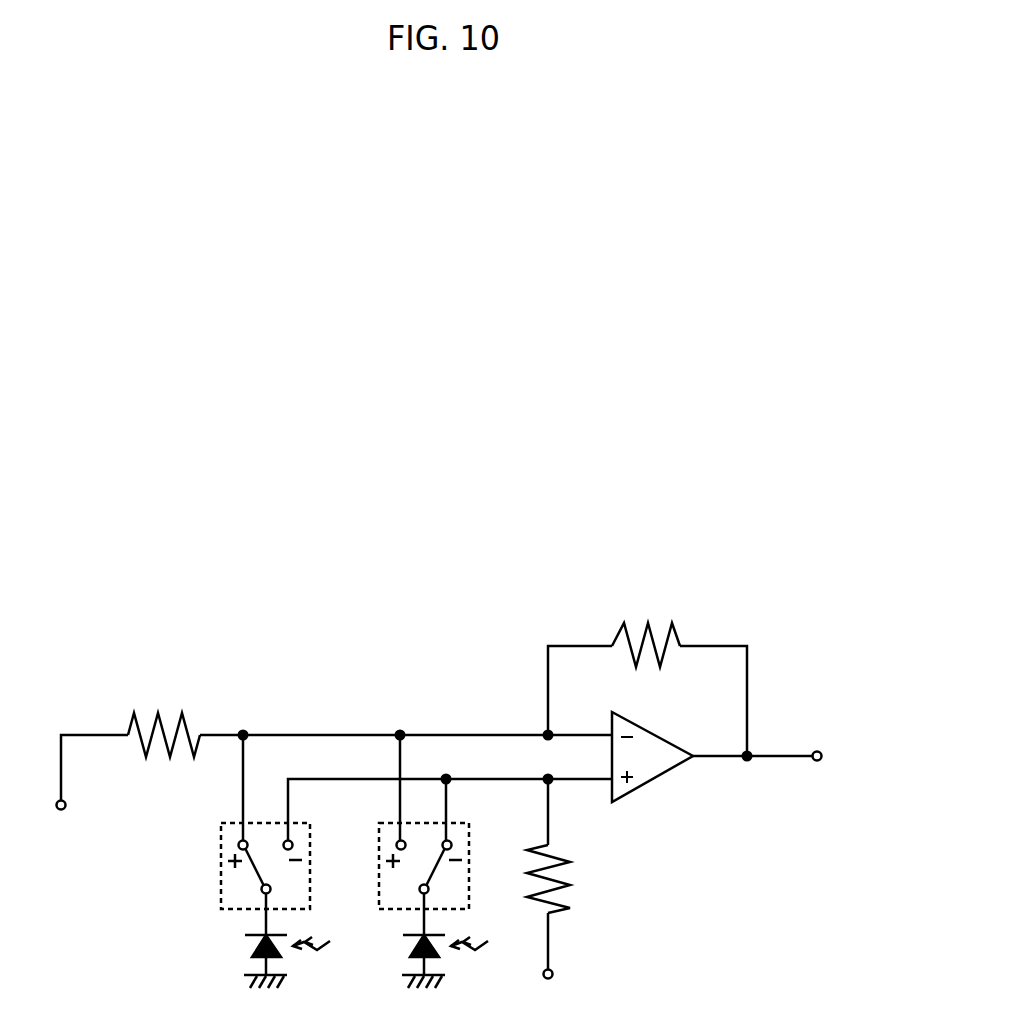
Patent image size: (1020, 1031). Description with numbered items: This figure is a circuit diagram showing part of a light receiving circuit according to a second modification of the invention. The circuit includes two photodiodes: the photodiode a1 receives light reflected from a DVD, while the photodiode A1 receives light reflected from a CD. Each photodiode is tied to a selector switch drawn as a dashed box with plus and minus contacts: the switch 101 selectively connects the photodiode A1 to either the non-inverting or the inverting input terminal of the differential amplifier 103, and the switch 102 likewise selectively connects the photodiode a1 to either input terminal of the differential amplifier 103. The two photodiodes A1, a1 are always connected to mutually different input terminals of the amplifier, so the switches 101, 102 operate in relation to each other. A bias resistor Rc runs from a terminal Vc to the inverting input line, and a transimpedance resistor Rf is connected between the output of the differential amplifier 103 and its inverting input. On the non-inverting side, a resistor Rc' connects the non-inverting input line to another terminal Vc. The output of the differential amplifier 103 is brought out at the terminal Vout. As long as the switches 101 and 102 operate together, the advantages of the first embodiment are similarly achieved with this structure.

The switch 101 is at (221, 858).
The switch 102 is at (380, 858).
The differential amplifier 103 is at (650, 780).
The bias resistor Rc is at (164, 718).
The transimpedance resistor Rf is at (646, 626).
The resistor Rc' is at (573, 879).
The photodiode A1 is at (269, 940).
The photodiode a1 is at (428, 940).
The terminal Vc is at (304, 915).
The terminal Vout is at (863, 757).